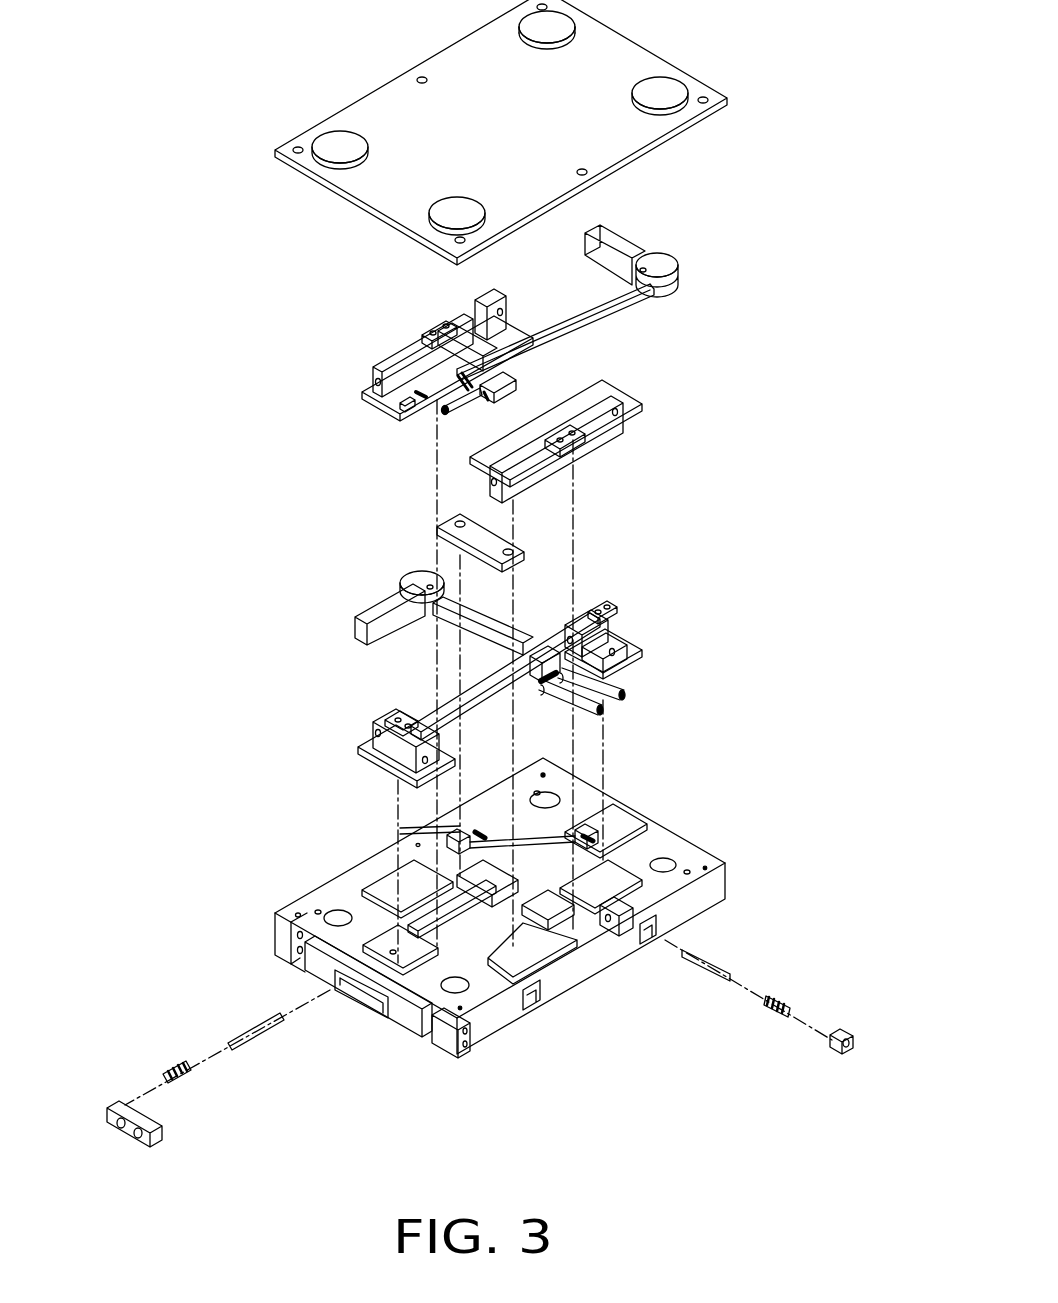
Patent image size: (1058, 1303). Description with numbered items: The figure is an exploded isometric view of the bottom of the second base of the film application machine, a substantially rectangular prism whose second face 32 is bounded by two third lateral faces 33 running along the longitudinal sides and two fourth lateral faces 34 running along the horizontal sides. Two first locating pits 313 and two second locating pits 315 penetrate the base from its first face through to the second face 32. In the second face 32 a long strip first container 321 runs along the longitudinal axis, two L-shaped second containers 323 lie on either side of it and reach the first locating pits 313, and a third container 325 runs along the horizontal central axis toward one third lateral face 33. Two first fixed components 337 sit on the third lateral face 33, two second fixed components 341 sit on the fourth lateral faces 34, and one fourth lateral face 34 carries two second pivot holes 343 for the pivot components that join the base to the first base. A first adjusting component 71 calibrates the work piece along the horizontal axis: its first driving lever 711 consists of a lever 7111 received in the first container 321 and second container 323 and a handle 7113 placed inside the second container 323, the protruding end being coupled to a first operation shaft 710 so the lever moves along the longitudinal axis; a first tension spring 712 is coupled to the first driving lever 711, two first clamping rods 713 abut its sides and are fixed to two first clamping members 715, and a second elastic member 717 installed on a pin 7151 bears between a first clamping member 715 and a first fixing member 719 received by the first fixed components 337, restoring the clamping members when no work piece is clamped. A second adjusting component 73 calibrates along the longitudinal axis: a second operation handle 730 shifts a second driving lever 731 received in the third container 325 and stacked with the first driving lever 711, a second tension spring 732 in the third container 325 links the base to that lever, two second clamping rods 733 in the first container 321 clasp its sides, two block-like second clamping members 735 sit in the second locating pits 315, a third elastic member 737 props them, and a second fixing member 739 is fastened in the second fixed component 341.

The first adjusting component 71 is at (571, 349).
The first operation shaft 710 is at (672, 268).
The first driving lever 711 is at (783, 302).
The lever 7111 is at (570, 323).
The handle 7113 is at (480, 377).
The first tension spring 712 is at (435, 387).
The first clamping rods 713 is at (452, 338).
The first clamping members 715 is at (577, 418).
The pin 7151 is at (708, 970).
The second elastic member 717 is at (780, 997).
The first fixing member 719 is at (823, 1048).
The second adjusting component 73 is at (496, 651).
The second operation handle 730 is at (375, 608).
The second driving lever 731 is at (520, 643).
The second tension spring 732 is at (620, 687).
The second clamping rods 733 is at (422, 712).
The second clamping members 735 is at (368, 747).
The third elastic member 737 is at (167, 1073).
The second fixing member 739 is at (157, 1122).
The second face 32 is at (500, 917).
The first locating pits 313 is at (388, 882).
The second locating pits 315 is at (615, 838).
The first container 321 is at (543, 772).
The second containers 323 is at (550, 948).
The third container 325 is at (623, 873).
The third lateral faces 33 is at (572, 978).
The first fixed components 337 is at (648, 940).
The fourth lateral faces 34 is at (316, 995).
The second fixed components 341 is at (372, 1003).
The second pivot holes 343 is at (427, 1028).